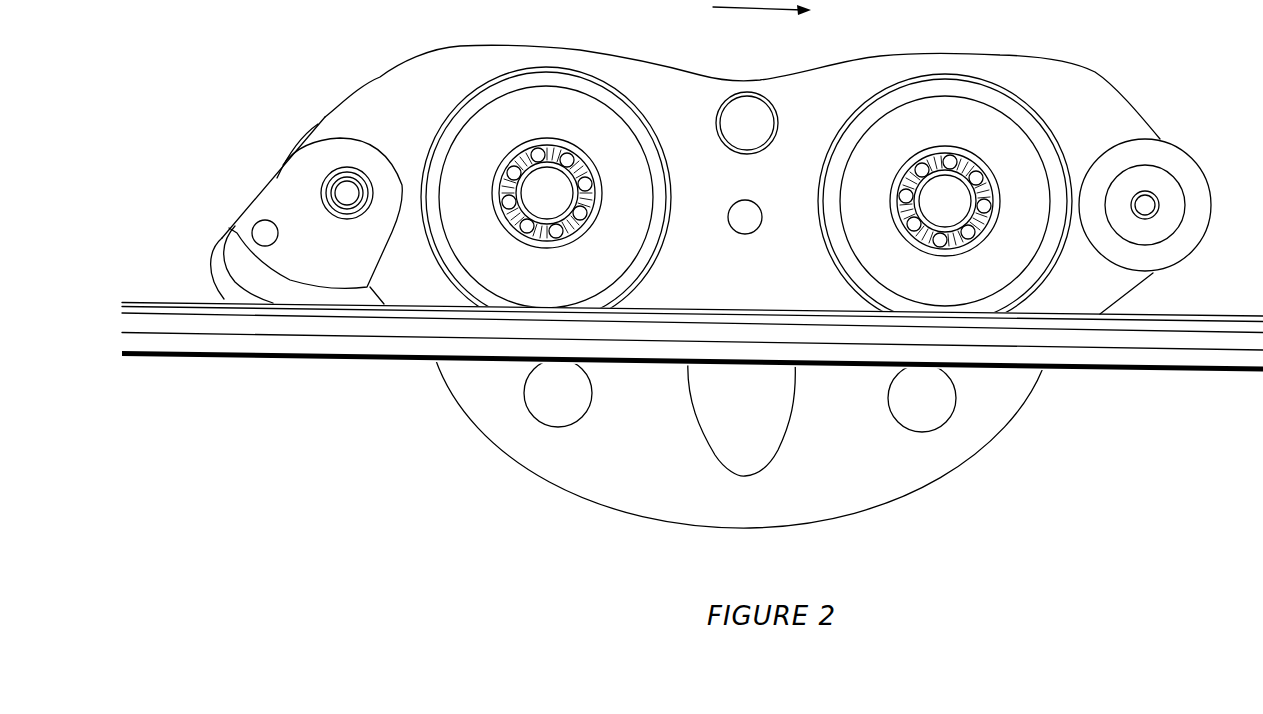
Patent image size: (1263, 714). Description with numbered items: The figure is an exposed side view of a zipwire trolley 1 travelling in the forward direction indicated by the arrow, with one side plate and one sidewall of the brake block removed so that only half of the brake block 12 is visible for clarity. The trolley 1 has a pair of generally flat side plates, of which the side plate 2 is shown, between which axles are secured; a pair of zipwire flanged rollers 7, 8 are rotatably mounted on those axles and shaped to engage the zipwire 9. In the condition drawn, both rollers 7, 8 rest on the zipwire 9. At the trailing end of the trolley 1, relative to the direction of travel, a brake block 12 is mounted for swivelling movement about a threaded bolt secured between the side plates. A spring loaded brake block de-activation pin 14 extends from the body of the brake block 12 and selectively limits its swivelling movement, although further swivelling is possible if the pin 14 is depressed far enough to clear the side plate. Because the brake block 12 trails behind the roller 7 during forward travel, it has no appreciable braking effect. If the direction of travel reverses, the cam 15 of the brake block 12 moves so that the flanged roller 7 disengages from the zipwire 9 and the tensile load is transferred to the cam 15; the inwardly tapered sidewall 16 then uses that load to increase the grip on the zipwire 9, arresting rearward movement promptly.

The zipwire trolley 1 is at (744, 158).
The side plate 2 is at (739, 466).
The zipwire flanged roller 7 is at (557, 197).
The zipwire flanged roller 8 is at (936, 201).
The zipwire 9 is at (692, 378).
The brake block 12 is at (312, 177).
The brake block de-activation pin 14 is at (241, 201).
The cam 15 is at (214, 248).
The inwardly tapered sidewall 16 is at (185, 268).